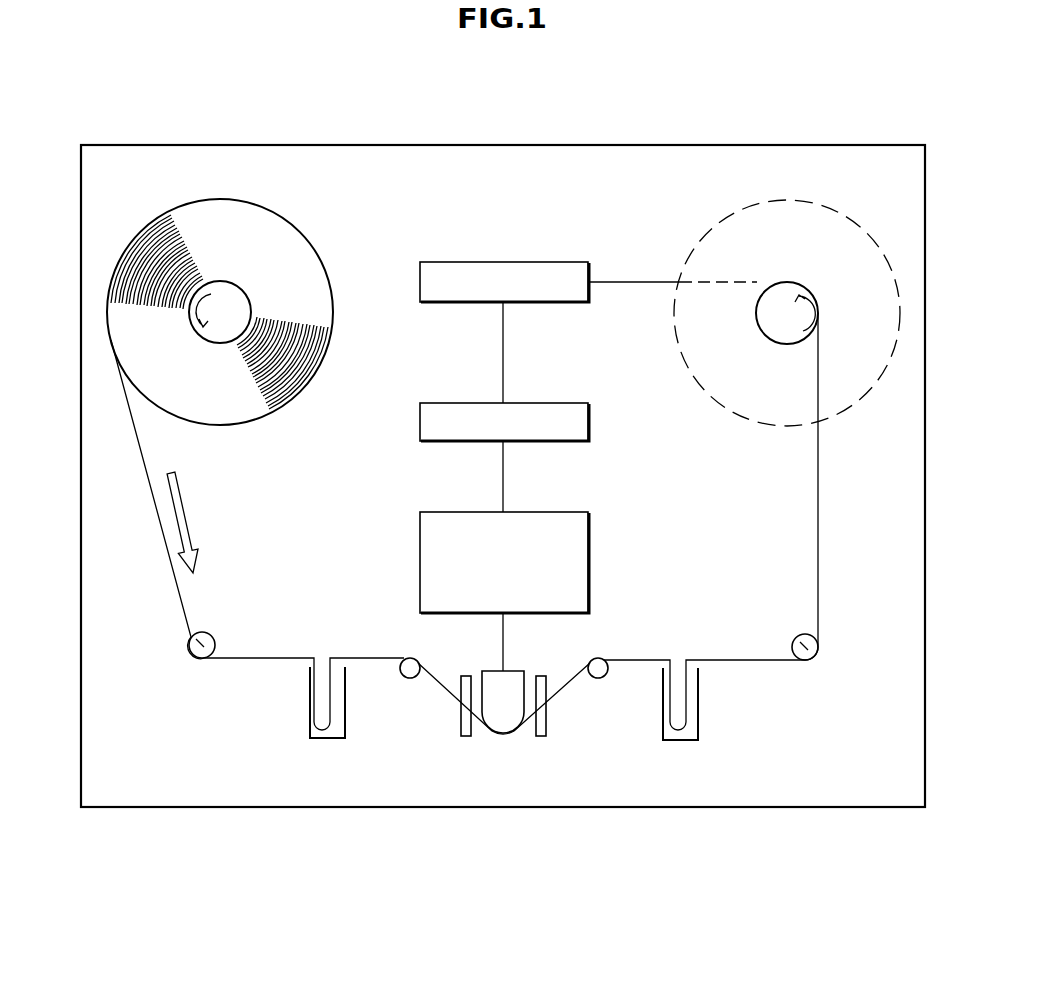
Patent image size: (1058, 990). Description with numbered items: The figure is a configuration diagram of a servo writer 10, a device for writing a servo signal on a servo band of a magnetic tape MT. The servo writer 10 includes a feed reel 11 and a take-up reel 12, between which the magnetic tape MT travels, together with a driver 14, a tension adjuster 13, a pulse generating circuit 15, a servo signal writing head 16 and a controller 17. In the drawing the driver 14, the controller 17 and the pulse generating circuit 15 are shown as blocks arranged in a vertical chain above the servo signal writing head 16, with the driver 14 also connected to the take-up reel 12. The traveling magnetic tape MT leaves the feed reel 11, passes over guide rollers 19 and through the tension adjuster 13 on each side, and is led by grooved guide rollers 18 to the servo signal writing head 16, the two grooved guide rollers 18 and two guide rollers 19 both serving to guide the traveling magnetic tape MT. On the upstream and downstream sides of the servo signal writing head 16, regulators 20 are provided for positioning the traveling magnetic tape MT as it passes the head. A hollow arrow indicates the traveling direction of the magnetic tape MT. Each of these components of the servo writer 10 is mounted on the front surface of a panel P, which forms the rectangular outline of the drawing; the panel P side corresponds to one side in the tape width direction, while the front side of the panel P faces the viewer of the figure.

The servo writer 10 is at (528, 134).
The feed reel 11 is at (222, 303).
The take-up reel 12 is at (785, 303).
The tension adjuster 13 is at (323, 740).
The driver 14 is at (558, 262).
The pulse generating circuit 15 is at (571, 512).
The servo signal writing head 16 is at (503, 716).
The controller 17 is at (571, 403).
The grooved guide roller 18 is at (405, 678).
The guide roller 19 is at (195, 653).
The regulator 20 is at (465, 736).
The magnetic tape MT is at (818, 528).
The panel P is at (797, 778).